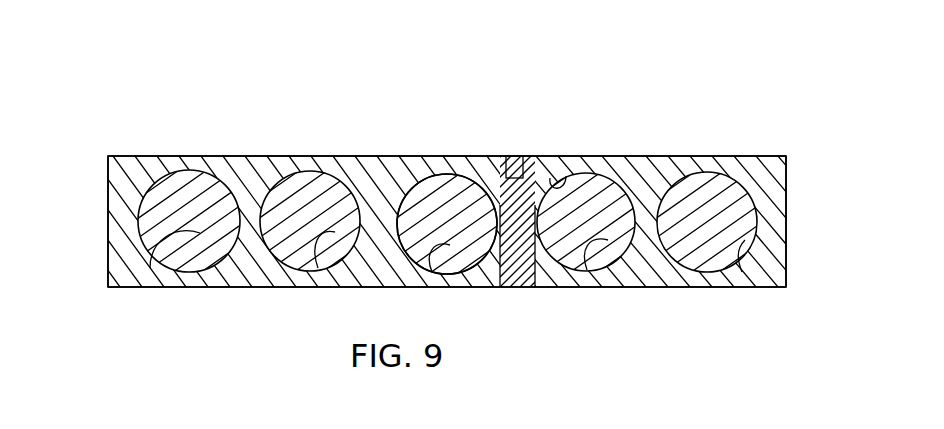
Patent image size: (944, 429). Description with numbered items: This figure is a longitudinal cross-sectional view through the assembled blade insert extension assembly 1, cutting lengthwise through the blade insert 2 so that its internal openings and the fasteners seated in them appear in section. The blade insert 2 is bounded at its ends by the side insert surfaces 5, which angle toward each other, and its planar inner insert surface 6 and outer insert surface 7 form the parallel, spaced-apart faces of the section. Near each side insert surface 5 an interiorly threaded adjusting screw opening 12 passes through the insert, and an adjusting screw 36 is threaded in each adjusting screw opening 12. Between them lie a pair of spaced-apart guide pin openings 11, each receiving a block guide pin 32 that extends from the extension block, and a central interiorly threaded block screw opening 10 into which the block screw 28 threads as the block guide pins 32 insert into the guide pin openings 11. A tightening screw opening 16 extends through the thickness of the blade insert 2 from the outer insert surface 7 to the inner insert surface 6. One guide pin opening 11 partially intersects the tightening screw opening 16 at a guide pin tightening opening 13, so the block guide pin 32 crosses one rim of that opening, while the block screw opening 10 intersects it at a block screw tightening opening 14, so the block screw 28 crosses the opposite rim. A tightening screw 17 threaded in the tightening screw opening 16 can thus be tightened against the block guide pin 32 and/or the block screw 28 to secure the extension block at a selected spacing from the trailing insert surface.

The blade insert extension assembly 1 is at (118, 108).
The blade insert 2 is at (198, 296).
The side insert surfaces 5 is at (108, 230).
The inner insert surface 6 is at (678, 288).
The outer insert surface 7 is at (638, 157).
The block screw opening 10 is at (432, 272).
The guide pin openings 11 is at (290, 178).
The adjusting screw opening 12 is at (163, 183).
The guide pin tightening opening 13 is at (566, 176).
The block screw tightening opening 14 is at (470, 183).
The tightening screw opening 16 is at (506, 270).
The tightening screw 17 is at (524, 186).
The block screw 28 is at (440, 158).
The block guide pin 32 is at (318, 268).
The adjusting screw 36 is at (150, 268).